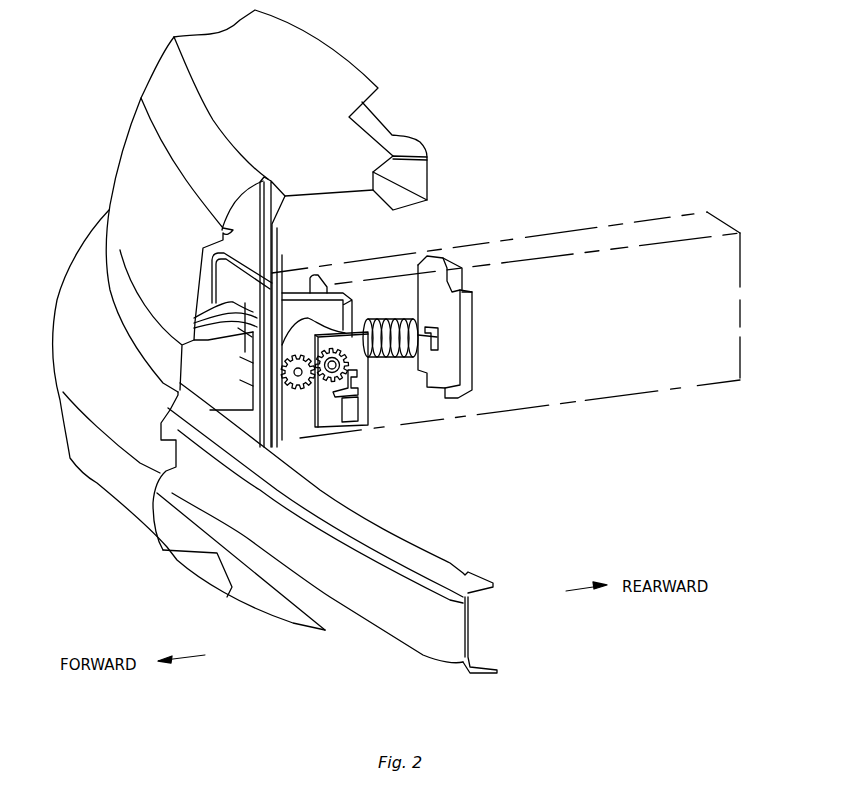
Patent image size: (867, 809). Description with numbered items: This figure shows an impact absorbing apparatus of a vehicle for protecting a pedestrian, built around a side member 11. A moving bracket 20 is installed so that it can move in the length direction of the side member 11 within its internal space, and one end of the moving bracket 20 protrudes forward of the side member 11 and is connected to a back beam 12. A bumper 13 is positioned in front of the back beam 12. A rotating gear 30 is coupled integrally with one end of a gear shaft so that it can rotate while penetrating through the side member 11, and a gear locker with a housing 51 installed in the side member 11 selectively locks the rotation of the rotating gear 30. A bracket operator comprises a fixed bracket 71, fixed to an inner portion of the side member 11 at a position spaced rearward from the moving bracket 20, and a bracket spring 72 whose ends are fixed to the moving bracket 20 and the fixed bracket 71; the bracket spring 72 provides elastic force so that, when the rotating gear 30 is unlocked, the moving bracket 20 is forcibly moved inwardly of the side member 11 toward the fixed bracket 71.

The side member 11 is at (623, 233).
The back beam 12 is at (377, 597).
The bumper 13 is at (122, 483).
The moving bracket 20 is at (213, 385).
The rotating gear 30 is at (298, 380).
The housing 51 is at (337, 420).
The fixed bracket 71 is at (470, 300).
The bracket spring 72 is at (397, 357).